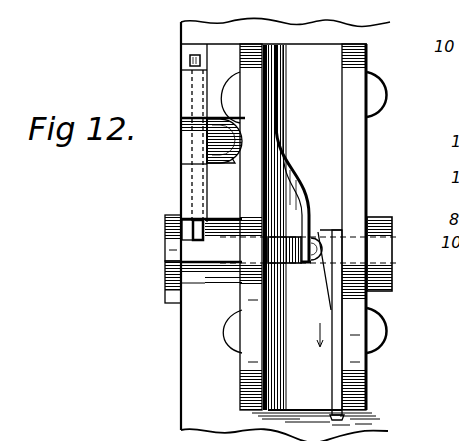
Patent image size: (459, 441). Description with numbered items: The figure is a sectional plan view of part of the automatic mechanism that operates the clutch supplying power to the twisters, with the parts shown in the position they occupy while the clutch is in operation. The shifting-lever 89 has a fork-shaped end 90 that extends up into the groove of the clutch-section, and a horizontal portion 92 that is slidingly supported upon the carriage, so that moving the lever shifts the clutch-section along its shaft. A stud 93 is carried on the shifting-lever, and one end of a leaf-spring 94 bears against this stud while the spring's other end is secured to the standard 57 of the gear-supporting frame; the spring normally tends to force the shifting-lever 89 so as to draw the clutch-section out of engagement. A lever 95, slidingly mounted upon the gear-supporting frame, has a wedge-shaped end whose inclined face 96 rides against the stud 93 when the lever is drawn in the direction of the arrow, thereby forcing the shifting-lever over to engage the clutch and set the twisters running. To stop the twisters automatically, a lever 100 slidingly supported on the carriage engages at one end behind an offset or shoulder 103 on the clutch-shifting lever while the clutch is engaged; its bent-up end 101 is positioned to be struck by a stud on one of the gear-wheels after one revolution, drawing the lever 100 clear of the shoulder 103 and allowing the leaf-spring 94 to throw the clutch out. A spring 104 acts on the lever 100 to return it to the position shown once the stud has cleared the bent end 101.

The standard 57 is at (346, 80).
The shifting-lever 89 is at (212, 251).
The fork-shaped end 90 is at (172, 291).
The horizontal portion 92 is at (291, 278).
The stud 93 is at (316, 232).
The leaf-spring 94 is at (293, 170).
The lever 95 is at (334, 379).
The inclined face 96 is at (367, 296).
The lever 100 is at (190, 172).
The bent-up end 101 is at (189, 60).
The offset or shoulder 103 is at (186, 231).
The spring 104 is at (208, 149).